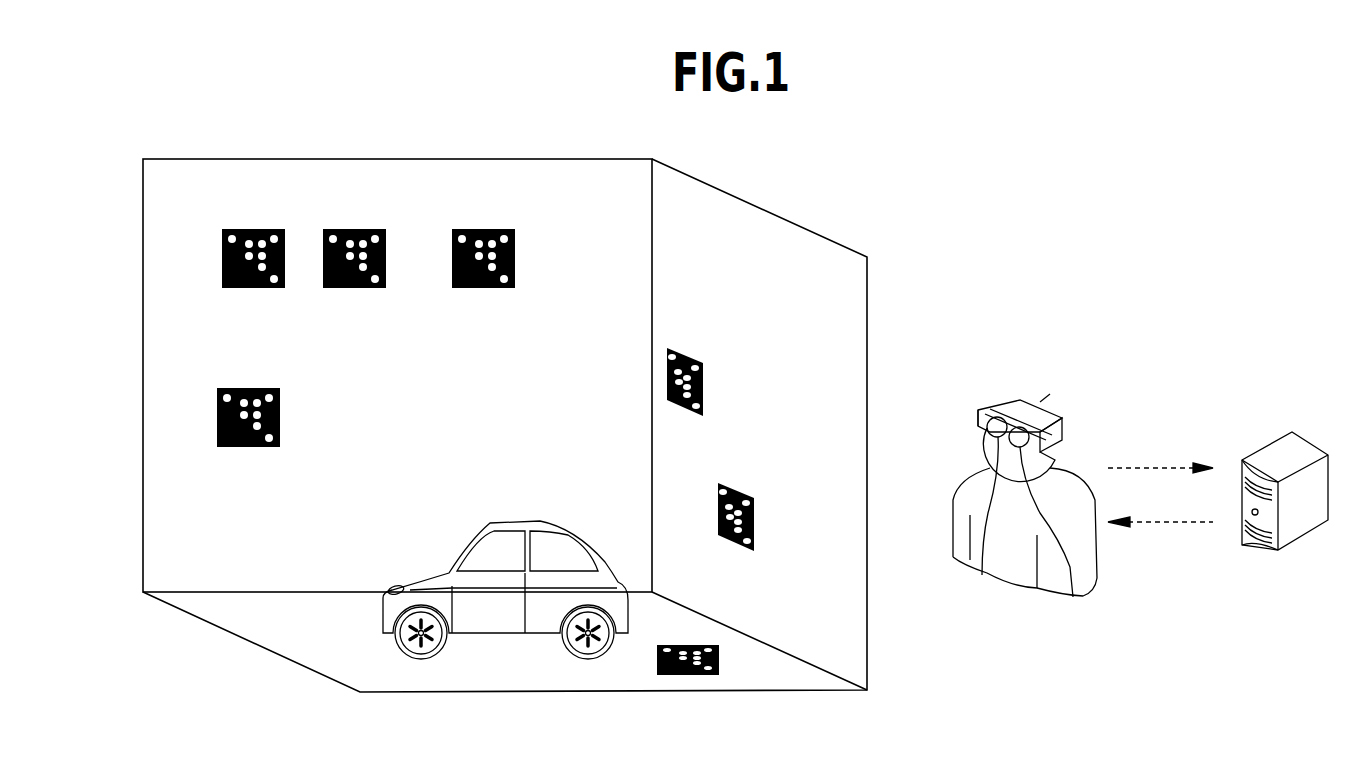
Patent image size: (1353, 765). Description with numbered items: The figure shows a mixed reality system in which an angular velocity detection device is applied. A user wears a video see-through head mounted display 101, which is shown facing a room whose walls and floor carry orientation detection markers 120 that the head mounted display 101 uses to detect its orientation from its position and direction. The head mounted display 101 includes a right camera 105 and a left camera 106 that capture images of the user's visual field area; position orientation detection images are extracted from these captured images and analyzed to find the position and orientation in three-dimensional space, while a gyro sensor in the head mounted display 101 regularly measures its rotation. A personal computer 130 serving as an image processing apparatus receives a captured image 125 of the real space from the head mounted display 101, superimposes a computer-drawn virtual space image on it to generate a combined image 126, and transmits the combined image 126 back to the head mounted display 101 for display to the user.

The head mounted display 101 is at (1018, 402).
The right camera 105 is at (982, 575).
The left camera 106 is at (1073, 597).
The orientation detection markers 120 is at (486, 230).
The captured image 125 is at (1152, 467).
The combined image 126 is at (1168, 523).
The personal computer 130 is at (1272, 443).